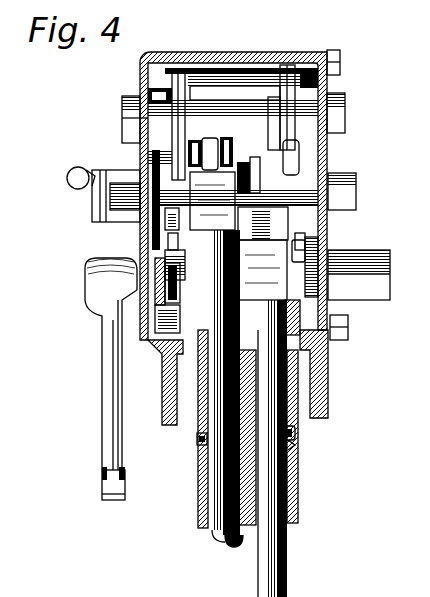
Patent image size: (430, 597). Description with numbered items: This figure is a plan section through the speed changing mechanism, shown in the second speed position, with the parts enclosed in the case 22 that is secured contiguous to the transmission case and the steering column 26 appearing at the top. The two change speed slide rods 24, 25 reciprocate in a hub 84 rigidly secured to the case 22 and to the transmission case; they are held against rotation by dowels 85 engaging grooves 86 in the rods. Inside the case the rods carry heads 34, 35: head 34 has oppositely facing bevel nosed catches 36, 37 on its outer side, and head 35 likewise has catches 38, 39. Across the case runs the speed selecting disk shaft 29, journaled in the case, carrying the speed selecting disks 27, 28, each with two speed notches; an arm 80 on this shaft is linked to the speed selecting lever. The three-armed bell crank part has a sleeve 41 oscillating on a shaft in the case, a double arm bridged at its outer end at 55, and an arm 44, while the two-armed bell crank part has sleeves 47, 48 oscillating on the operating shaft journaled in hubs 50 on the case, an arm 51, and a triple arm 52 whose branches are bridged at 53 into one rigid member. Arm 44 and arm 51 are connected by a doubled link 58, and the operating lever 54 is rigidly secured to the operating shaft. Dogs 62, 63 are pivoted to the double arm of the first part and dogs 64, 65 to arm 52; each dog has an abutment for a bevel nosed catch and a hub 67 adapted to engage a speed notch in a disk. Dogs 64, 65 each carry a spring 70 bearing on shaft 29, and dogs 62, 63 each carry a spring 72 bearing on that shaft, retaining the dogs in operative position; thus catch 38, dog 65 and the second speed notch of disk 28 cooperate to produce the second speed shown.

The case 22 is at (283, 52).
The change speed slide rod 24 is at (218, 483).
The change speed slide rod 25 is at (290, 558).
The steering column 26 is at (204, 62).
The speed selecting disk 27 is at (147, 173).
The speed selecting disk 28 is at (330, 171).
The speed selecting disk shaft 29 is at (287, 190).
The head 34 is at (212, 201).
The head 35 is at (262, 270).
The bevel nosed catch 36 is at (168, 192).
The bevel nosed catch 37 is at (188, 208).
The bevel nosed catch 38 is at (330, 253).
The bevel nosed catch 39 is at (297, 240).
The sleeve 41 is at (213, 100).
The arm 44 is at (265, 150).
The sleeve 47 is at (365, 252).
The sleeve 48 is at (140, 262).
The hub 50 is at (377, 288).
The arm 51 is at (268, 230).
The triple arm 52 is at (348, 333).
The bridge 53 is at (186, 262).
The operating lever 54 is at (110, 402).
The bridge 55 is at (238, 66).
The link 58 is at (257, 167).
The dog 62 is at (180, 128).
The dog 63 is at (345, 110).
The dog 64 is at (172, 288).
The dog 65 is at (322, 285).
The hub 67 is at (143, 92).
The spring 70 is at (168, 240).
The spring 72 is at (180, 165).
The arm 80 is at (105, 212).
The hub 84 is at (298, 512).
The dowel 85 is at (197, 440).
The groove 86 is at (295, 448).